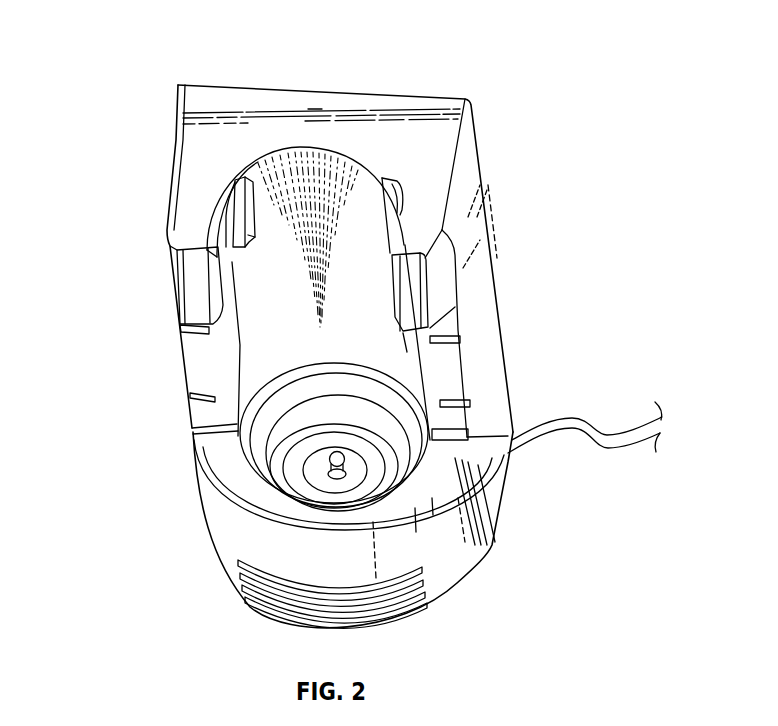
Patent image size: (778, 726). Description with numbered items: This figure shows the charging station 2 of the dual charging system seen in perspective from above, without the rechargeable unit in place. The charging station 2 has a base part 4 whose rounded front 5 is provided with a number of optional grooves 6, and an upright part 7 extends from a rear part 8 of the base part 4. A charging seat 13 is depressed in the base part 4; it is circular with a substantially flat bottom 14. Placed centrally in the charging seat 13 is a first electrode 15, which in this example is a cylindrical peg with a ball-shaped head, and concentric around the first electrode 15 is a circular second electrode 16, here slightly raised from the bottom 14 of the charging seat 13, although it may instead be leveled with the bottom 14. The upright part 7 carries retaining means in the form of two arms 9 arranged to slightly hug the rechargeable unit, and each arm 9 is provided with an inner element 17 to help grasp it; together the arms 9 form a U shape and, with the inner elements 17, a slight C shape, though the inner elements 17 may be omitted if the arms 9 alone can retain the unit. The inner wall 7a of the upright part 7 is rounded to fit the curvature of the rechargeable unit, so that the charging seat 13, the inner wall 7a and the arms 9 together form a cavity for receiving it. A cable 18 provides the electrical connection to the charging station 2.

The charging station 2 is at (110, 38).
The base part 4 is at (497, 470).
The rounded front 5 is at (473, 552).
The grooves 6 is at (240, 578).
The upright part 7 is at (473, 165).
The inner wall 7a is at (338, 203).
The rear part 8 is at (497, 383).
The arms 9 is at (197, 290).
The charging seat 13 is at (270, 437).
The bottom 14 is at (330, 463).
The first electrode 15 is at (268, 475).
The second electrode 16 is at (377, 463).
The inner element 17 is at (226, 222).
The cable 18 is at (576, 418).